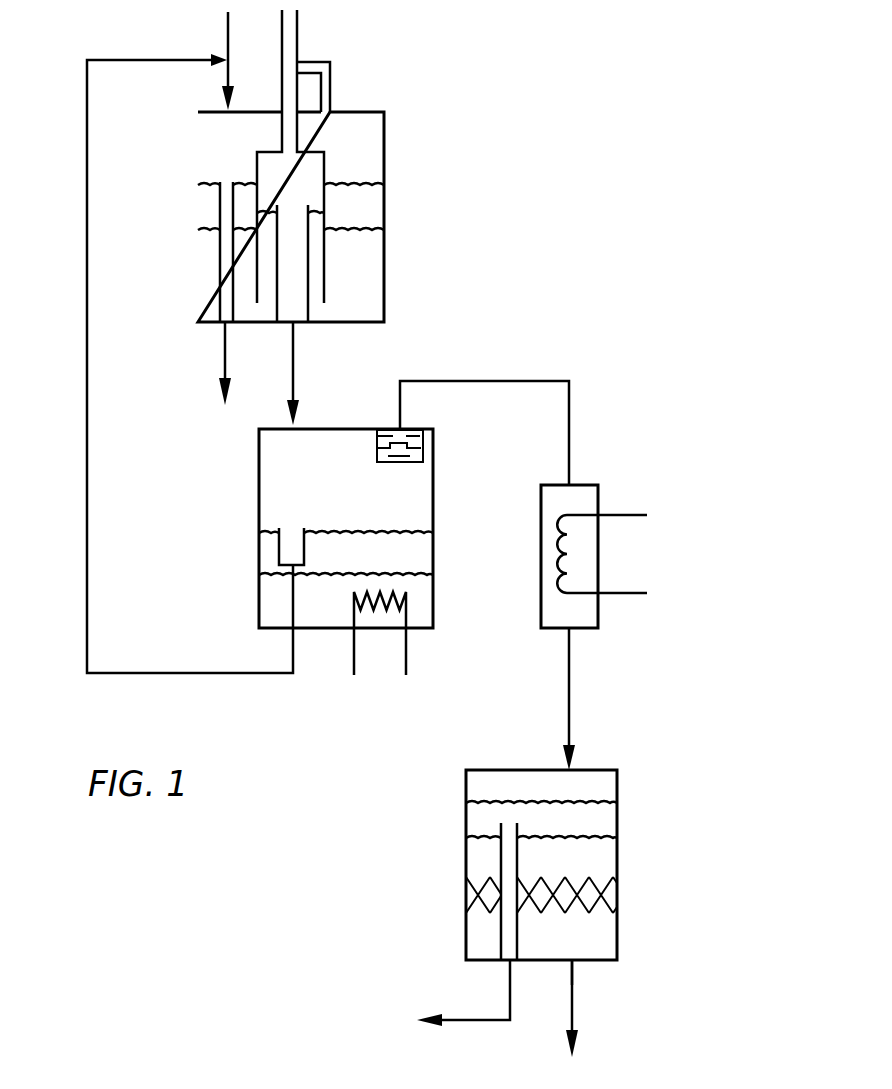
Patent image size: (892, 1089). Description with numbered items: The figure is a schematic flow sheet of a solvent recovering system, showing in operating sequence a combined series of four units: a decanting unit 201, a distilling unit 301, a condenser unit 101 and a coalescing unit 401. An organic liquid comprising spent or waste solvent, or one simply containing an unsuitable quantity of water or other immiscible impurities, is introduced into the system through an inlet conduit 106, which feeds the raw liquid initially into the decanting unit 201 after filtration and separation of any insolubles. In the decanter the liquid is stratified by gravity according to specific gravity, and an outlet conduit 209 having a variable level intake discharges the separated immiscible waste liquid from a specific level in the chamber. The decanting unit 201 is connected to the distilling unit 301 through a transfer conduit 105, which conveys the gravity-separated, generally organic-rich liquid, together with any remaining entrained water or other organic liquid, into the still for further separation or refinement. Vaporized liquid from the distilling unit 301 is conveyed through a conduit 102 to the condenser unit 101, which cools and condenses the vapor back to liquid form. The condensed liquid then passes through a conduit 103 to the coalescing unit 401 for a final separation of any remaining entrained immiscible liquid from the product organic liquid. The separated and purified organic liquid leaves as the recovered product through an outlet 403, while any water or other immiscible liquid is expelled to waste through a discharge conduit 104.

The condenser unit 101 is at (600, 613).
The conduit 102 is at (571, 405).
The conduit 103 is at (572, 712).
The discharge conduit 104 is at (462, 1017).
The transfer conduit 105 is at (296, 366).
The inlet conduit 106 is at (226, 24).
The decanting unit 201 is at (388, 205).
The outlet conduit 209 is at (224, 366).
The distilling unit 301 is at (257, 601).
The coalescing unit 401 is at (464, 869).
The outlet 403 is at (576, 966).